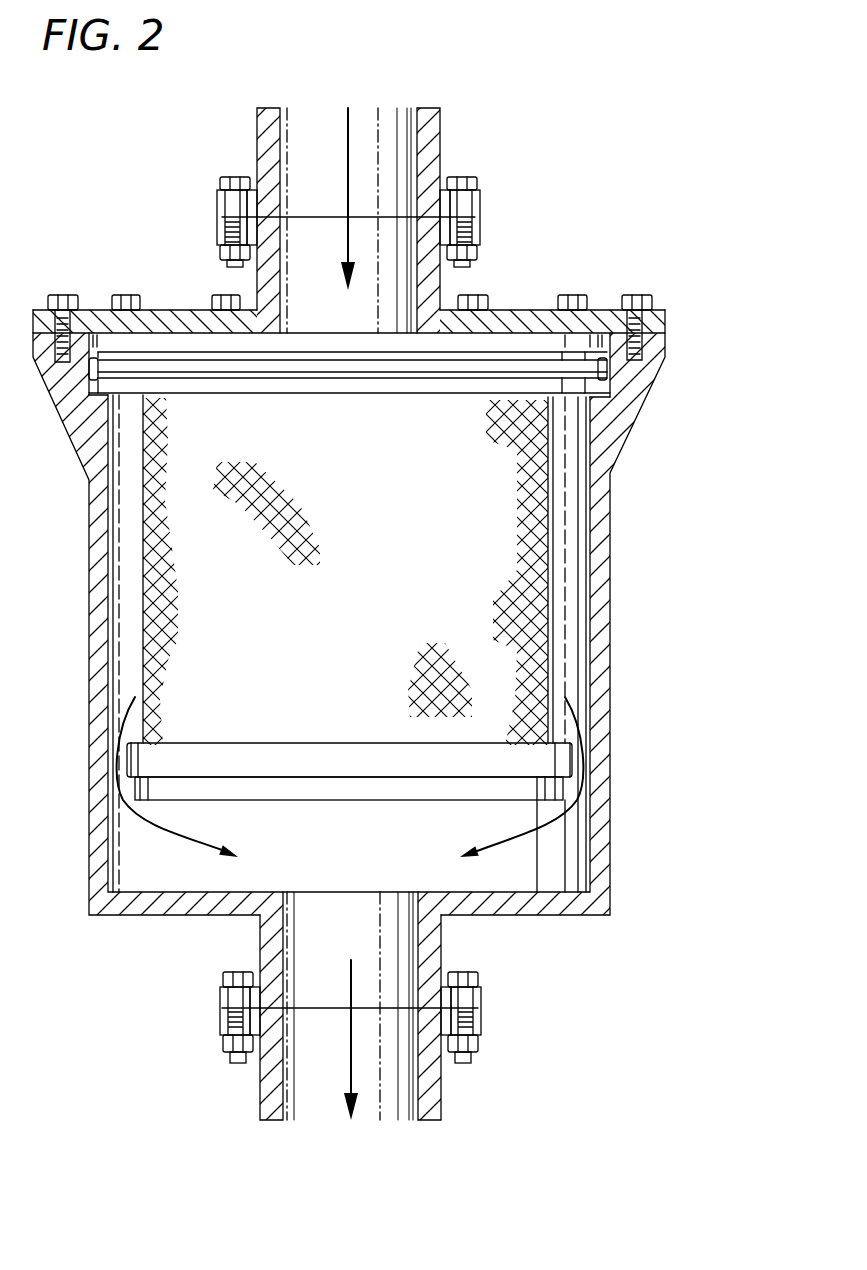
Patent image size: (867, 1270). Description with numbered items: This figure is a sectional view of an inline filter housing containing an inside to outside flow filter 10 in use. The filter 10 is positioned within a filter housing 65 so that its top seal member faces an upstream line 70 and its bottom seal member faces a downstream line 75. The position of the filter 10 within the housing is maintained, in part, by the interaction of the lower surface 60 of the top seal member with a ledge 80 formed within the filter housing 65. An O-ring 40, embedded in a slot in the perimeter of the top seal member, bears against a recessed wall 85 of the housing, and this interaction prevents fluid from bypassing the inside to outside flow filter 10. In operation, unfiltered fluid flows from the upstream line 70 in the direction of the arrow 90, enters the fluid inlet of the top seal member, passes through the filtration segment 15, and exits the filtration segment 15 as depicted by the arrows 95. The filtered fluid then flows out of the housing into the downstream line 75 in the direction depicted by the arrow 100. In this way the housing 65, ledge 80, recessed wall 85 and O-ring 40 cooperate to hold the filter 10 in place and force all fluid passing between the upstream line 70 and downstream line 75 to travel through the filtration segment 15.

The inside to outside flow filter 10 is at (365, 580).
The filtration segment 15 is at (555, 545).
The O-ring 40 is at (525, 363).
The lower surface 60 is at (597, 463).
The filter housing 65 is at (612, 636).
The upstream line 70 is at (257, 143).
The downstream line 75 is at (260, 1097).
The ledge 80 is at (612, 420).
The recessed wall 85 is at (627, 344).
The arrow 90 is at (348, 140).
The arrows 95 is at (117, 760).
The arrow 100 is at (351, 1073).